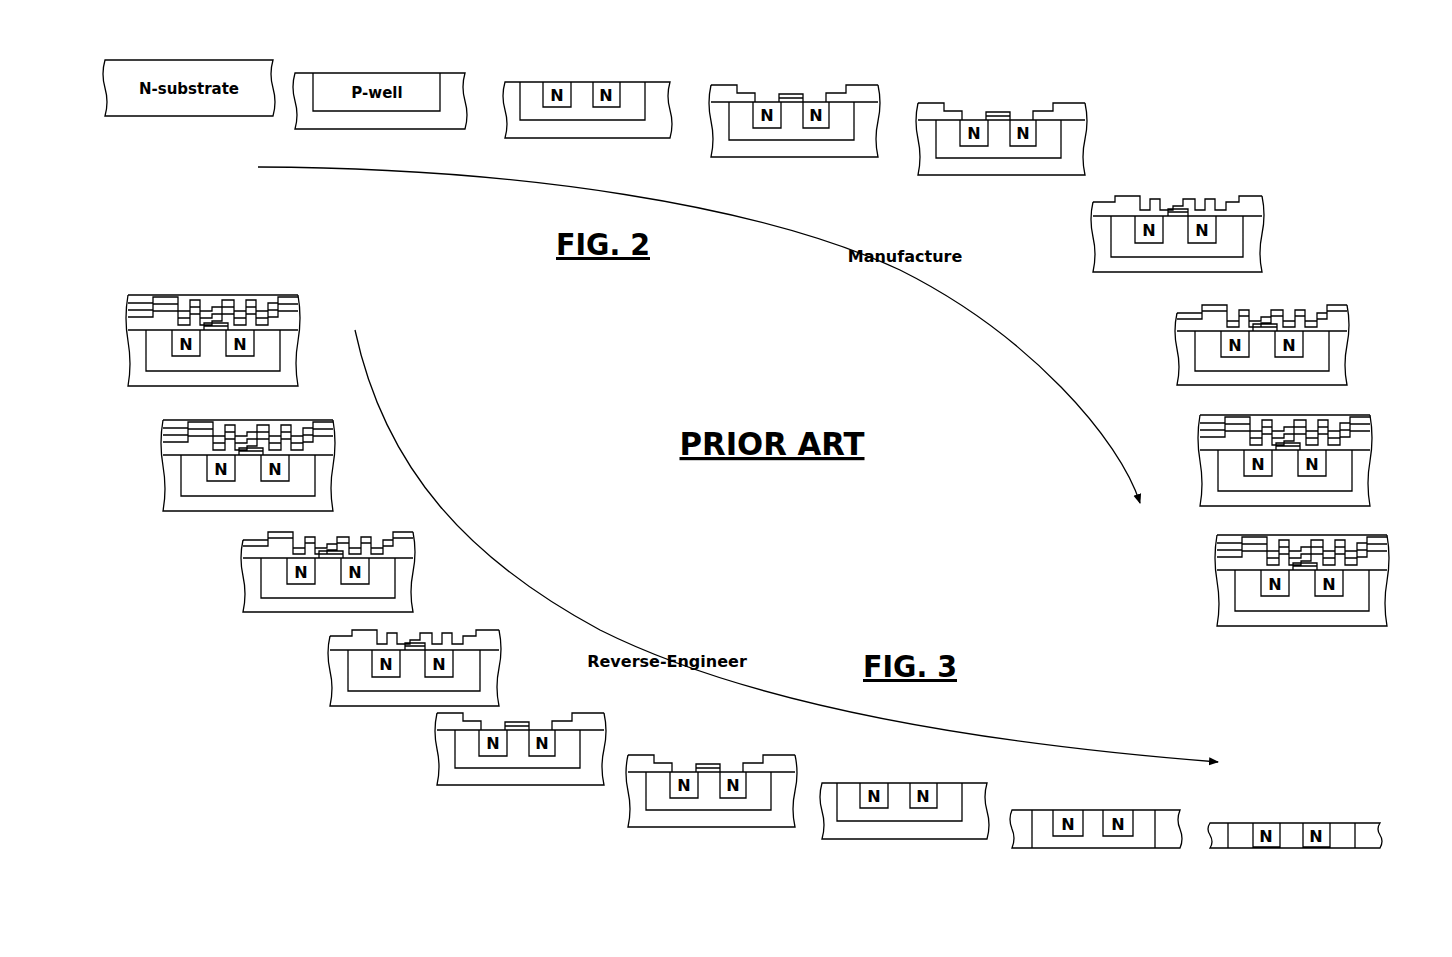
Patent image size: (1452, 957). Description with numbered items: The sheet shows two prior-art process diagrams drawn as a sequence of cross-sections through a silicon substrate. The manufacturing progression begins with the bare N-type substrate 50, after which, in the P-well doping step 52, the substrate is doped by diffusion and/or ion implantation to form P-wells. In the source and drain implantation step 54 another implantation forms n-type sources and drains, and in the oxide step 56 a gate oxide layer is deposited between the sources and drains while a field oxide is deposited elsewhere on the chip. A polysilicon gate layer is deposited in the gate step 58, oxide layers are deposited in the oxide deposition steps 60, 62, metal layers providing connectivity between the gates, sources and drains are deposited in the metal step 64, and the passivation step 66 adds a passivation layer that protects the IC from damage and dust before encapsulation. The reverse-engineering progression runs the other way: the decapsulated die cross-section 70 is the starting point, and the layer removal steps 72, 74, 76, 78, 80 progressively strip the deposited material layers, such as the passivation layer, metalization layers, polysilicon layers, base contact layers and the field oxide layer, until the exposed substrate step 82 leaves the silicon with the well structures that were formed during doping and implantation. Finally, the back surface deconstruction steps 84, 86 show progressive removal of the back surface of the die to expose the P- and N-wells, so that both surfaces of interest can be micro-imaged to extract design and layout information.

In FIG. 2, the silicon substrate step 50 is at (181, 130).
In FIG. 2, the P-well doping step 52 is at (428, 60).
In FIG. 2, the source and drain implantation step 54 is at (626, 62).
In FIG. 2, the gate oxide and field oxide deposition step 56 is at (811, 70).
In FIG. 2, the polysilicon gate deposition step 58 is at (1038, 92).
In FIG. 2, the oxide layer deposition step 60 is at (1201, 174).
In FIG. 2, the oxide layer deposition step 62 is at (1315, 284).
In FIG. 2, the metal layer deposition step 64 is at (1373, 399).
In FIG. 2, the passivation layer deposition step 66 is at (1203, 578).
In FIG. 3, the decapsulated die cross-section step 70 is at (216, 271).
In FIG. 3, the layer removal step 72 is at (151, 466).
In FIG. 3, the layer removal step 74 is at (233, 596).
In FIG. 3, the layer removal step 76 is at (321, 688).
In FIG. 3, the layer removal step 78 is at (430, 768).
In FIG. 3, the layer removal step 80 is at (627, 820).
In FIG. 3, the exposed silicon substrate step 82 is at (858, 848).
In FIG. 3, the back surface deconstruction step 84 is at (1044, 858).
In FIG. 3, the back surface deconstruction step 86 is at (1346, 815).